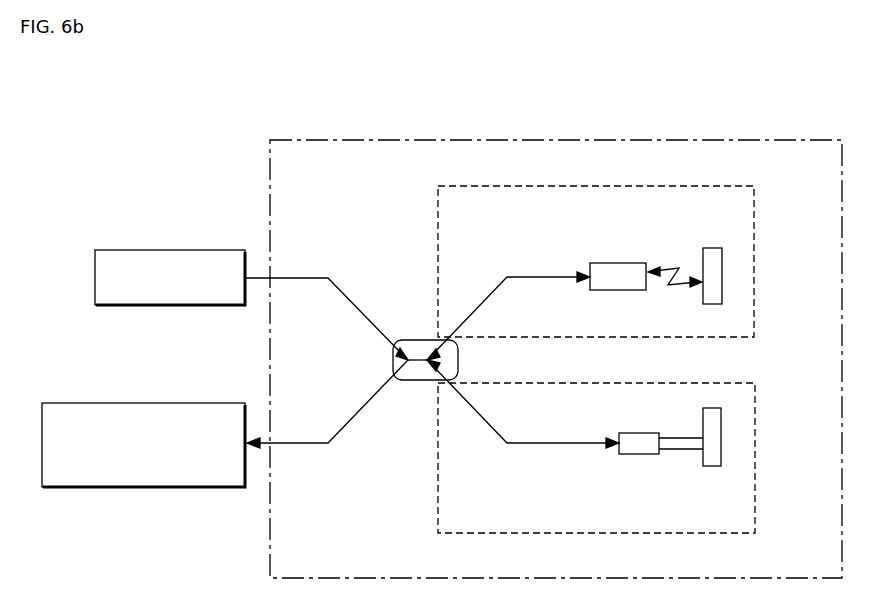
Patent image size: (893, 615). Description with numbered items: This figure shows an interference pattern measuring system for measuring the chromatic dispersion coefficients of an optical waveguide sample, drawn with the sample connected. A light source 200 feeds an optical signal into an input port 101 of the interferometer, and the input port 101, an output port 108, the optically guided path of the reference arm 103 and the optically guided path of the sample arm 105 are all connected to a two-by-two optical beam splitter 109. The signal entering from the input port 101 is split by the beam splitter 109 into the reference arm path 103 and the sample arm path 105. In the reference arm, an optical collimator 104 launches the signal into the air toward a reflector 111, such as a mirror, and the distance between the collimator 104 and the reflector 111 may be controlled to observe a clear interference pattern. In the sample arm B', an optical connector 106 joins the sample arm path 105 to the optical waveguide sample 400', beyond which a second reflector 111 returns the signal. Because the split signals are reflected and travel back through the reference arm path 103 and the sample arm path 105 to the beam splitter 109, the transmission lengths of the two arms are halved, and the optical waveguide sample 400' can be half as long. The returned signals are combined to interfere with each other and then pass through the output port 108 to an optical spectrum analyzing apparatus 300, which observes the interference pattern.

The input port 101 is at (303, 277).
The optically guided path of reference arm 103 is at (548, 274).
The optical collimator 104 is at (615, 263).
The optically guided path of sample arm 105 is at (575, 445).
The optical connector 106 is at (640, 455).
The output port 108 is at (285, 445).
The 2×2 optical beam splitter 109 is at (416, 340).
The reflector 111 is at (722, 272).
The light source 200 is at (127, 250).
The optical spectrum analyzing apparatus 300 is at (84, 403).
The optical waveguide sample 400' is at (683, 405).
The sample arm B' is at (631, 458).